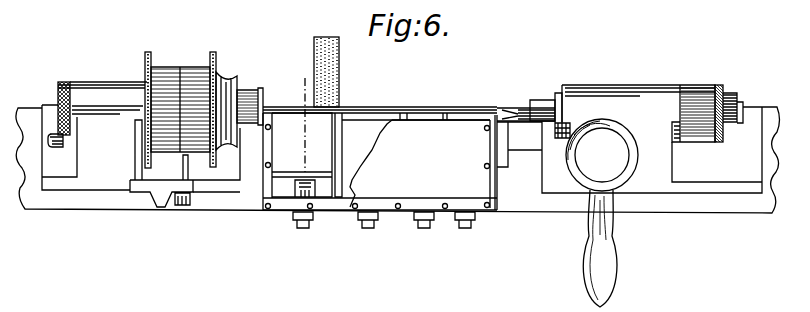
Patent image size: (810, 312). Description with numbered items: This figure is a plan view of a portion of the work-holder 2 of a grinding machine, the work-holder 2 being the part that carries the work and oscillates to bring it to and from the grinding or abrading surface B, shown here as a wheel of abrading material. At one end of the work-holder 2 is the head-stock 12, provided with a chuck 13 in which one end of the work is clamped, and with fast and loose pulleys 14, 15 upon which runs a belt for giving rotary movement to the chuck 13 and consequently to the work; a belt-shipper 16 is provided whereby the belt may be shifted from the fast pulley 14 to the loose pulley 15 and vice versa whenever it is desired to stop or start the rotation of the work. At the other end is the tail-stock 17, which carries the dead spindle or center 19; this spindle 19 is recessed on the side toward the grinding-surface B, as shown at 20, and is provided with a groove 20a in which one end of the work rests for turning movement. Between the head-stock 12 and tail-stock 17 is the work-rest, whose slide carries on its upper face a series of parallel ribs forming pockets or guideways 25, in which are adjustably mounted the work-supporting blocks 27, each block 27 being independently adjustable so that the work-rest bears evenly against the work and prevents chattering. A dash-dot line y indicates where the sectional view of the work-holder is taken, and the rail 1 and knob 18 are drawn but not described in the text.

The guide rail 1 is at (395, 107).
The work-holder 2 is at (549, 207).
The head-stock 12 is at (78, 133).
The chuck 13 is at (252, 87).
The fast pulley 14 is at (193, 70).
The loose pulley 15 is at (160, 63).
The belt-shipper 16 is at (138, 184).
The tail-stock 17 is at (613, 97).
The knob with handle 18 is at (617, 262).
The dead spindle or center 19 is at (548, 98).
The recess 20 is at (522, 107).
The groove 20a is at (501, 110).
The pockets or guideways 25 is at (283, 187).
The work-supporting blocks 27 is at (302, 155).
The grinding or abrading surface B is at (326, 59).
The section line y- y is at (291, 166).